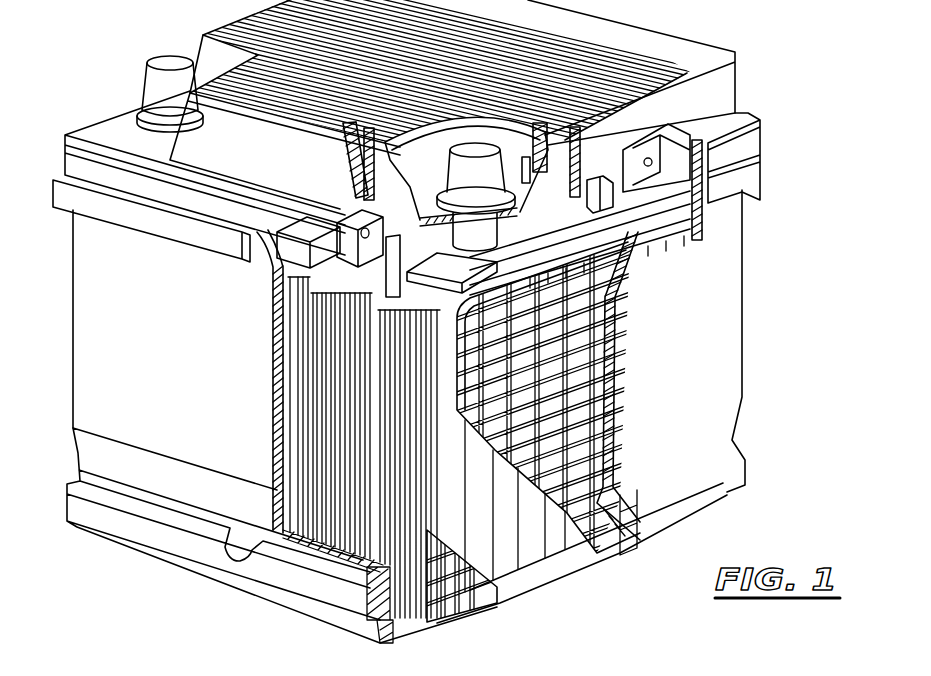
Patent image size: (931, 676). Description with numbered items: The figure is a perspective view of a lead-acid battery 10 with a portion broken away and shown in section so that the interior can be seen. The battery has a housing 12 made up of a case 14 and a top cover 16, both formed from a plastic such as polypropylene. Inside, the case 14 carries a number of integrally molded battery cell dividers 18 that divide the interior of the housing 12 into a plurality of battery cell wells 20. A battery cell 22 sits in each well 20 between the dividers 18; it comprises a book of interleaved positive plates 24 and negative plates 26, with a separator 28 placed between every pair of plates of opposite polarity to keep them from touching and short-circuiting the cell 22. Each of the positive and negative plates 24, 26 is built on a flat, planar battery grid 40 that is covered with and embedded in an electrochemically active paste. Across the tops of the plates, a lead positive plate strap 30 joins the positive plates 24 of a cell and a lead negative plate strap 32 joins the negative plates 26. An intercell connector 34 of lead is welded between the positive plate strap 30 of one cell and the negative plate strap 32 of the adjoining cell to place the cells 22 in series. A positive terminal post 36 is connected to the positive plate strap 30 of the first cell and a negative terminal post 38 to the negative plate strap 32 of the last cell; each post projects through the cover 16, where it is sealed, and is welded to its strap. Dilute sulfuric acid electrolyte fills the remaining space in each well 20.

The lead-acid battery 10 is at (775, 48).
The housing 12 is at (748, 305).
The case 14 is at (728, 396).
The top cover 16 is at (730, 75).
The battery cell dividers 18 is at (410, 300).
The battery cell wells 20 is at (568, 224).
The battery cell 22 is at (585, 572).
The positive plates 24 is at (453, 620).
The negative plates 26 is at (618, 548).
The separator 28 is at (537, 577).
The positive plate strap 30 is at (307, 230).
The negative plate strap 32 is at (380, 243).
The intercell connector 34 is at (365, 230).
The positive terminal post 36 is at (477, 148).
The negative terminal post 38 is at (172, 60).
The battery grid 40 is at (447, 620).